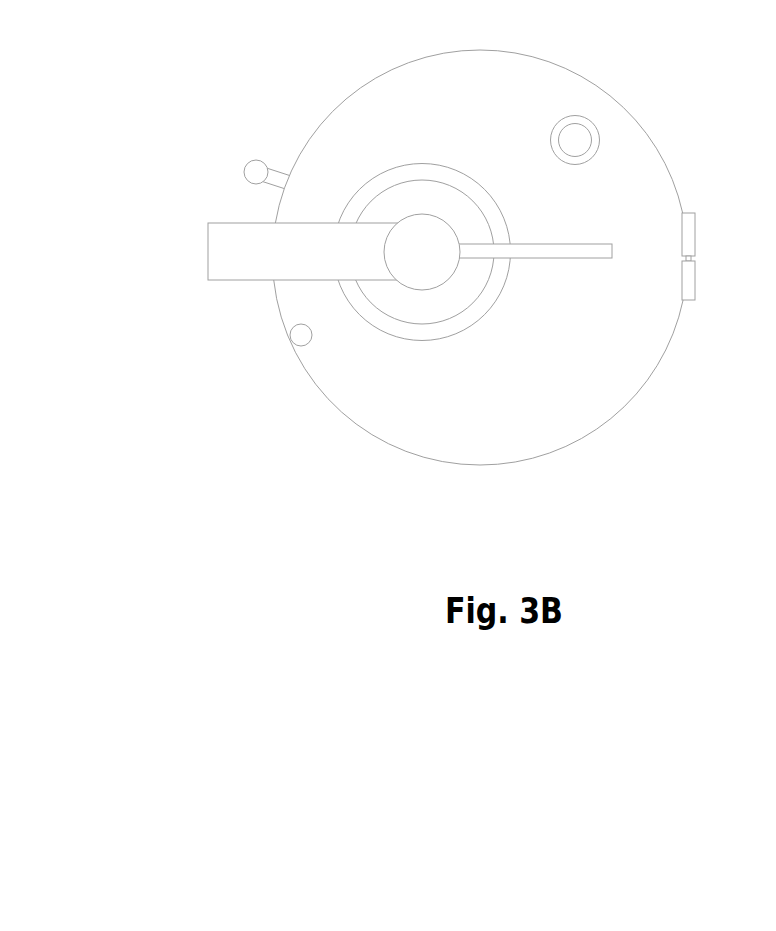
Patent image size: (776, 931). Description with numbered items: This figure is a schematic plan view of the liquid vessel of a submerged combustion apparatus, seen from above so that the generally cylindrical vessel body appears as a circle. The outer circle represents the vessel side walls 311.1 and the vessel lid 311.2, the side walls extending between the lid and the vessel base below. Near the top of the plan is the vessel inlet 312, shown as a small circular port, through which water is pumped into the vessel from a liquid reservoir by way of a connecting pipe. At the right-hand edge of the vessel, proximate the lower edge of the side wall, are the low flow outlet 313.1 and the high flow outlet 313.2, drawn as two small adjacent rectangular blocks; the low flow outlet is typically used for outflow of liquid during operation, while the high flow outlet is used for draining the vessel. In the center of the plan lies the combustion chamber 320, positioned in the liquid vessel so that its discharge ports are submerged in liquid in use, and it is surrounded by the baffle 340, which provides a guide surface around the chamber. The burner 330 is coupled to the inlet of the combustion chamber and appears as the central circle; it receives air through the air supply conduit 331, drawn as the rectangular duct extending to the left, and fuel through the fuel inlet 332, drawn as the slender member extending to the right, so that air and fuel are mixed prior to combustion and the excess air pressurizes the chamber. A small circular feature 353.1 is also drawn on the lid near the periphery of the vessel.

The vessel side walls 311.1 is at (363, 428).
The vessel lid 311.2 is at (580, 423).
The vessel inlet 312 is at (582, 122).
The low flow outlet 313.1 is at (690, 232).
The high flow outlet 313.2 is at (688, 302).
The combustion chamber 320 is at (473, 305).
The burner 330 is at (406, 214).
The air supply conduit 331 is at (253, 280).
The fuel inlet 332 is at (580, 243).
The baffle 340 is at (443, 165).
The fastening pin 353.1 is at (243, 163).